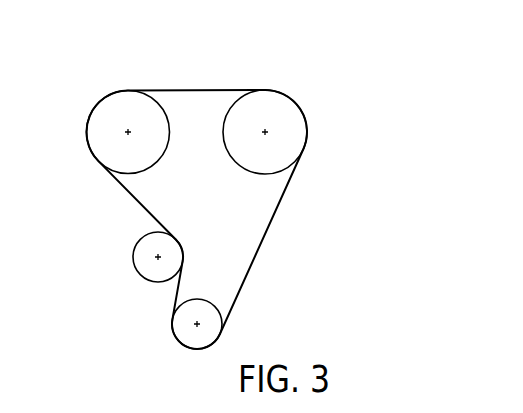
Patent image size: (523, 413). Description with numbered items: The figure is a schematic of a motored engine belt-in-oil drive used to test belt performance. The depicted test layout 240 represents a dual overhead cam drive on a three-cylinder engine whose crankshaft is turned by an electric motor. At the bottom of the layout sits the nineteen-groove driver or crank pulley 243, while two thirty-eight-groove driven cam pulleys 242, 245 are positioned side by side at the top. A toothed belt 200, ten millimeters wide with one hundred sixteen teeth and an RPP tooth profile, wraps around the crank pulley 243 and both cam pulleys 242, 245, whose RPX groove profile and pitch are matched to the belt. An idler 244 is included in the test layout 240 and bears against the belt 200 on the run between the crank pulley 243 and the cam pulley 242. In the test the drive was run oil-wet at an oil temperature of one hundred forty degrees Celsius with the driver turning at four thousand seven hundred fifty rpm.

The test layout 240 is at (313, 92).
The belt 200 is at (268, 233).
The driven cam pulley 242 is at (90, 133).
The driven cam pulley 245 is at (287, 153).
The crank pulley 243 is at (213, 317).
The idler 244 is at (147, 267).